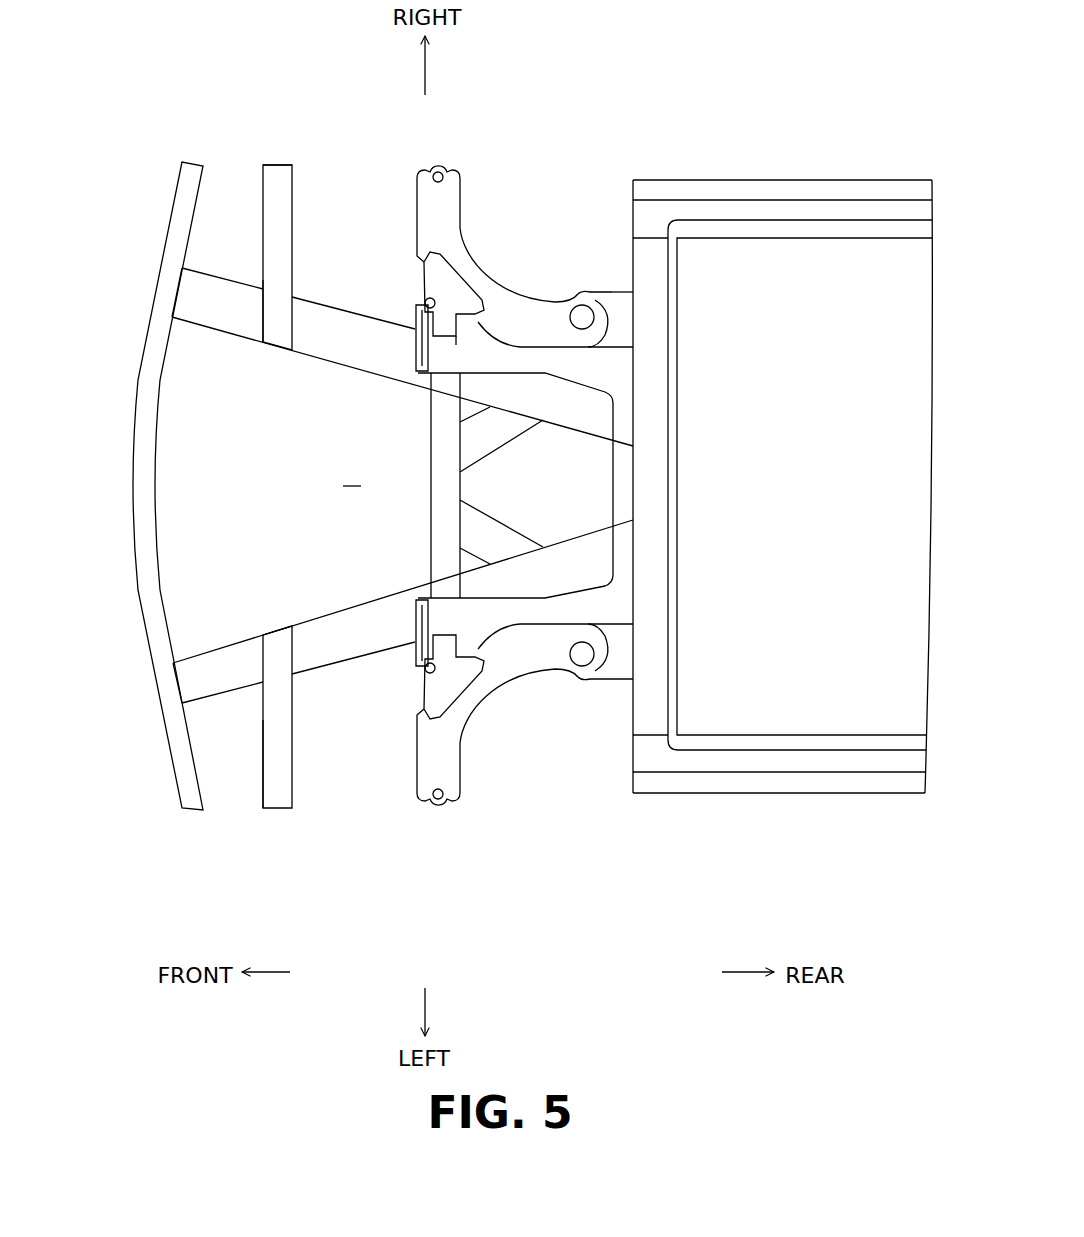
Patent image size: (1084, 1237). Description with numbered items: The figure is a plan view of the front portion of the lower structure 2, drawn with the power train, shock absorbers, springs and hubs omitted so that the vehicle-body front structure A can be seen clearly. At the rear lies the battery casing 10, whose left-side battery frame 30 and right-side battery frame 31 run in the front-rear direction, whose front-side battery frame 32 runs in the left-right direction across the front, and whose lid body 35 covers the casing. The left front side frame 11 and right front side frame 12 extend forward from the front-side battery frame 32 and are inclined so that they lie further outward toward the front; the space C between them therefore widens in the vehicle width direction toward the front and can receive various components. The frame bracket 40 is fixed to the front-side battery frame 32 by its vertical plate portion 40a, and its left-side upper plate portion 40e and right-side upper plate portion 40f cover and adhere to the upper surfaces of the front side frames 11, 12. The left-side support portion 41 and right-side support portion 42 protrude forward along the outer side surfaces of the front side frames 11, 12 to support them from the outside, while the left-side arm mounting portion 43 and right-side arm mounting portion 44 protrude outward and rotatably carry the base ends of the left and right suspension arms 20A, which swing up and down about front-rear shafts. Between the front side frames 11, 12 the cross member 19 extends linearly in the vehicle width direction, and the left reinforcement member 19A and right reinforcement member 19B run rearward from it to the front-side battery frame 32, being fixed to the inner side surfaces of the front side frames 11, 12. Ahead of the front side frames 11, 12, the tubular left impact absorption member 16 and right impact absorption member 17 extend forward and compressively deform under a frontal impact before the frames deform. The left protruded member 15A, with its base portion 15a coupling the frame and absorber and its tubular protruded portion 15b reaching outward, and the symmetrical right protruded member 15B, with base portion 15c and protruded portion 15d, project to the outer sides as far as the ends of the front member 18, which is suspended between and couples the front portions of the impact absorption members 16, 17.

The lower structure 2 is at (739, 88).
The battery casing 10 is at (759, 798).
The left front side frame 11 is at (320, 667).
The right front side frame 12 is at (328, 307).
The left protruded member 15A is at (290, 811).
The right protruded member 15B is at (272, 161).
The base portion 15a is at (272, 651).
The protruded portion 15b is at (275, 762).
The base portion 15c is at (272, 326).
The protruded portion 15d is at (281, 198).
The left impact absorption member 16 is at (223, 697).
The right impact absorption member 17 is at (229, 277).
The front member 18 is at (167, 268).
The cross member 19 is at (428, 547).
The left reinforcement member 19A is at (513, 520).
The right reinforcement member 19B is at (516, 439).
The suspension arm 20A is at (500, 280).
The left-side battery frame 30 is at (843, 800).
The right-side battery frame 31 is at (797, 178).
The front-side battery frame 32 is at (650, 263).
The lid body 35 is at (865, 265).
The frame bracket 40 is at (603, 287).
The vertical plate portion 40a is at (628, 372).
The left-side upper plate portion 40e is at (407, 634).
The right-side upper plate portion 40f is at (407, 337).
The left-side support portion 41 is at (568, 683).
The right-side support portion 42 is at (537, 362).
The left-side arm mounting portion 43 is at (613, 655).
The right-side arm mounting portion 44 is at (583, 292).
The vehicle-body front structure A is at (156, 713).
The space C is at (352, 470).